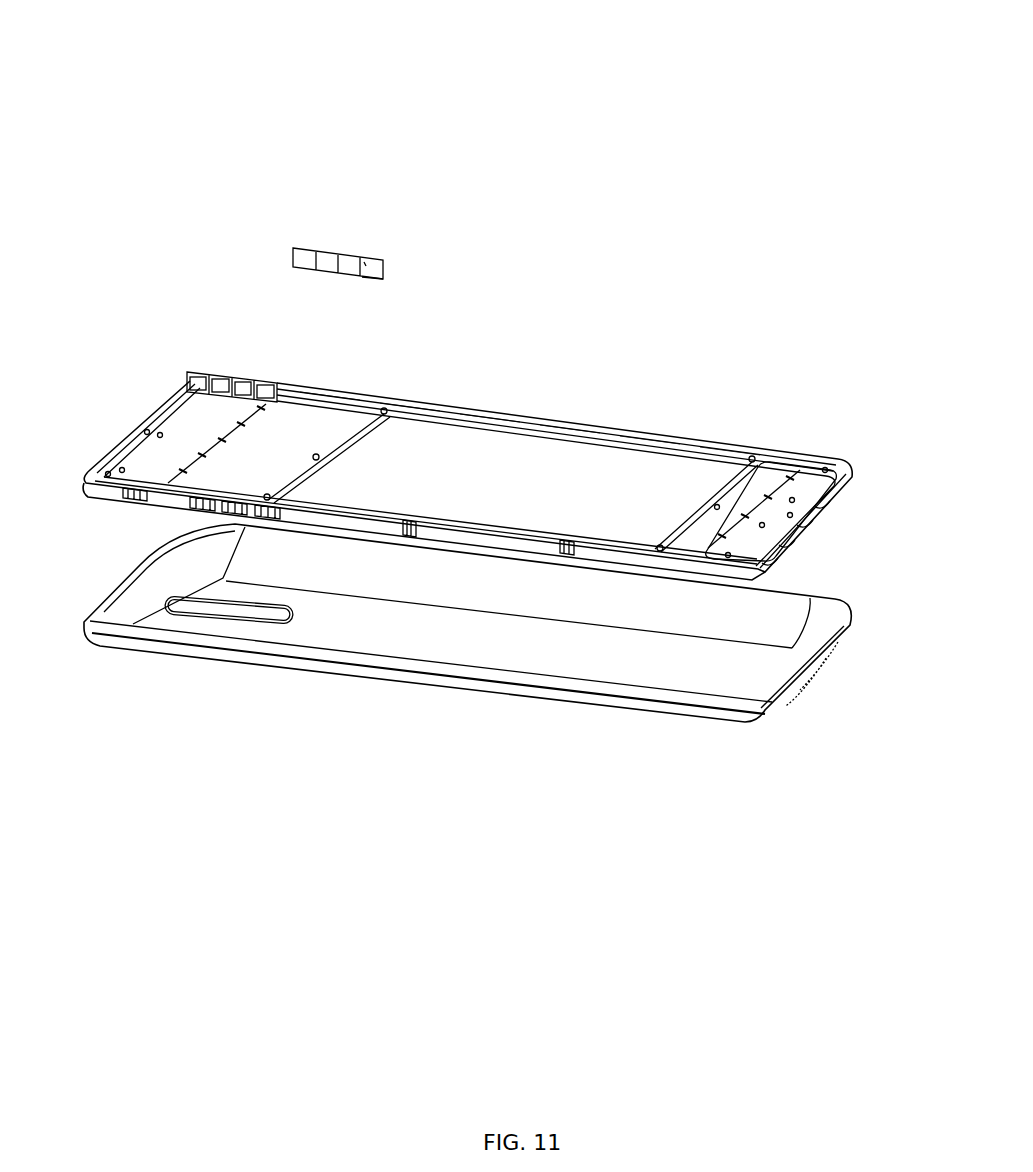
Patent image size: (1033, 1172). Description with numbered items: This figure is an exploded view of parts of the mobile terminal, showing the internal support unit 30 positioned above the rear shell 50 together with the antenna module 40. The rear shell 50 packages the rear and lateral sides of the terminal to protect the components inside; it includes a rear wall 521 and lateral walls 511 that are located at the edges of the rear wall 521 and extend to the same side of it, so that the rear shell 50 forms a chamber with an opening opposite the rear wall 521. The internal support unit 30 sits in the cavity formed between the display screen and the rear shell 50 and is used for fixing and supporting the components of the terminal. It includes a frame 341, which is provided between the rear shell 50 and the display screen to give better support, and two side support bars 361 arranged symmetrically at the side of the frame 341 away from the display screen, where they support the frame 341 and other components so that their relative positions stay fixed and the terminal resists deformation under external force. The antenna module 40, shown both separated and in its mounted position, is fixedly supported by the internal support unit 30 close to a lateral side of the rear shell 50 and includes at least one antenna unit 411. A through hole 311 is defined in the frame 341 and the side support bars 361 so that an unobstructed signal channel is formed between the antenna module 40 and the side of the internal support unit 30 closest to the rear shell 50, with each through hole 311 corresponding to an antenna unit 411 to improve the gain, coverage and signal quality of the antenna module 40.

The internal support unit 30 is at (869, 57).
The antenna module 40 is at (241, 372).
The antenna unit 411 is at (383, 280).
The frame 341 is at (463, 408).
The side support bars 361 is at (150, 500).
The through hole 311 is at (182, 510).
The lateral wall 511 is at (728, 618).
The rear wall 521 is at (315, 622).
The rear shell 50 is at (487, 694).